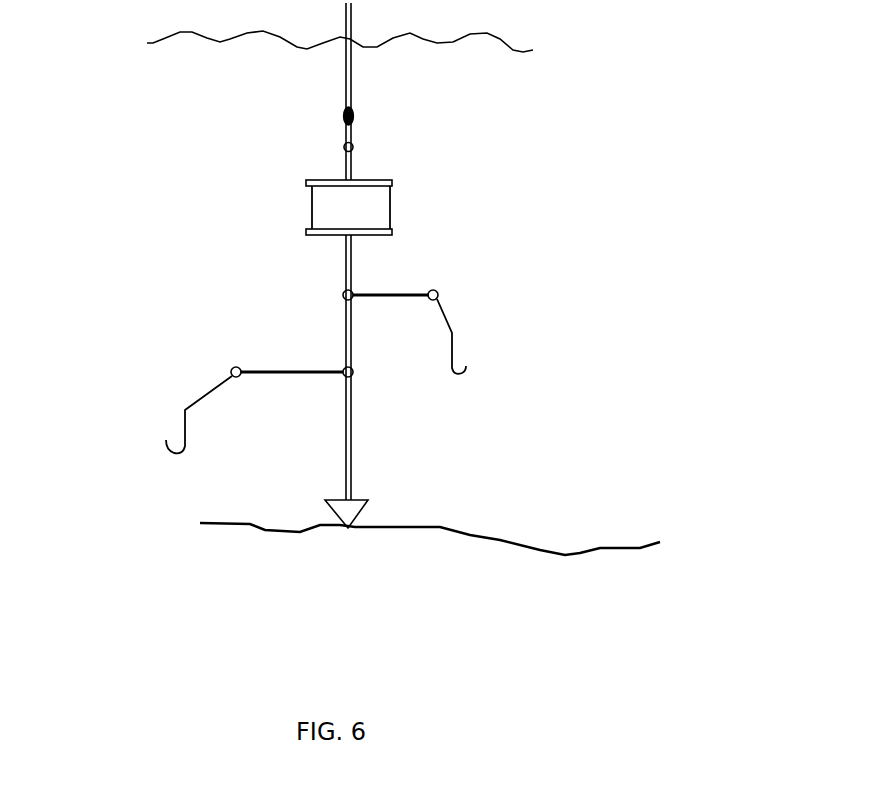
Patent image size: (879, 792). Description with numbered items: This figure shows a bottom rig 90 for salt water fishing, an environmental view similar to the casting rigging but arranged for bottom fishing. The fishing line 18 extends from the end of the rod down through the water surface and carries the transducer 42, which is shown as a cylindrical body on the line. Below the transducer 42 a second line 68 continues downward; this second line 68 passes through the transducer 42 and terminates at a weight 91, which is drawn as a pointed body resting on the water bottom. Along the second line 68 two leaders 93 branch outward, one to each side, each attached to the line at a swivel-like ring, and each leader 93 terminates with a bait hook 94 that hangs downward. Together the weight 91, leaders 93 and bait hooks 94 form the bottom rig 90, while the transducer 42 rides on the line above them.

The fishing line 18 is at (348, 76).
The transducer 42 is at (312, 204).
The second line 68 is at (346, 257).
The bottom rig 90 is at (623, 198).
The weight 91 is at (365, 503).
The leaders 93 is at (400, 295).
The bait hooks 94 is at (453, 333).